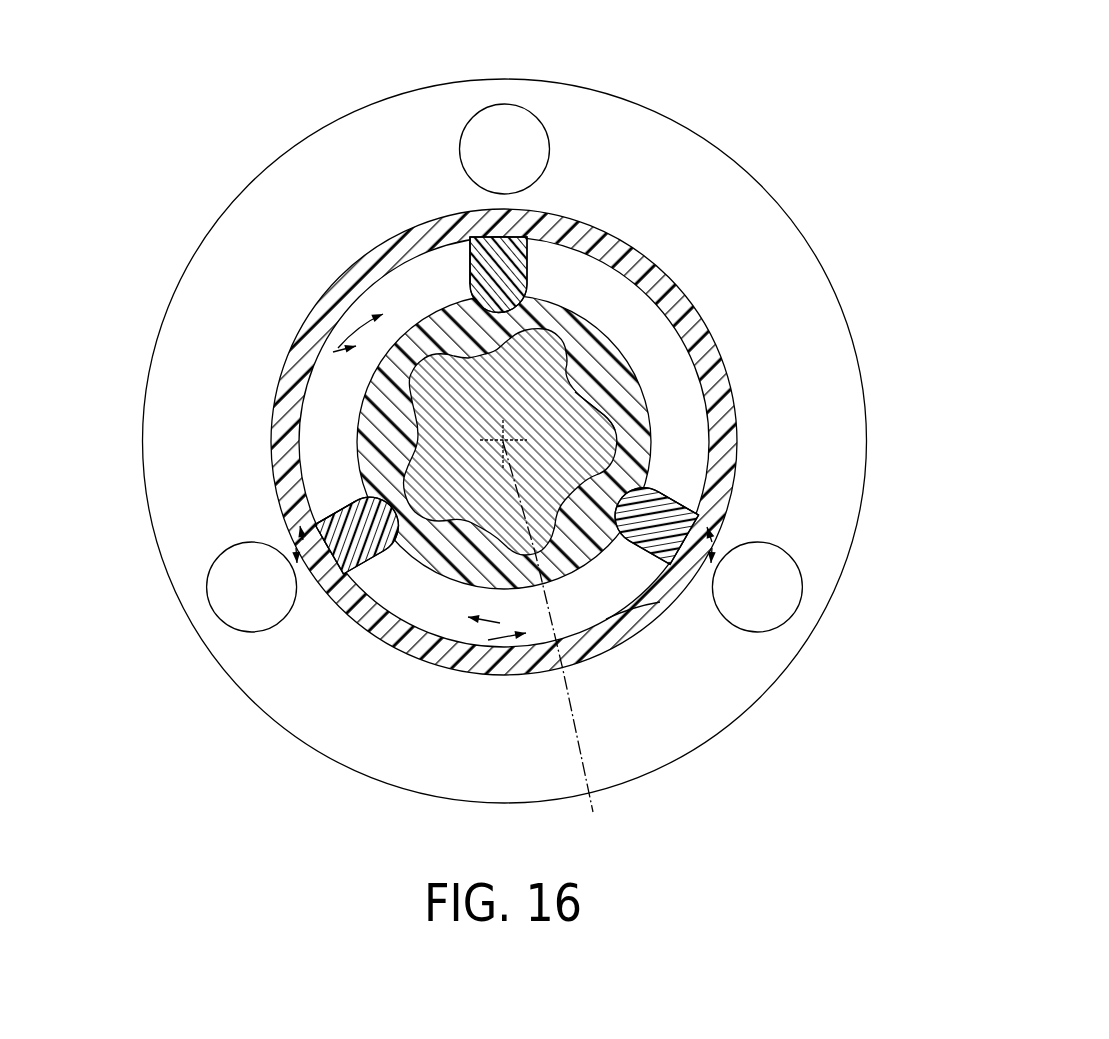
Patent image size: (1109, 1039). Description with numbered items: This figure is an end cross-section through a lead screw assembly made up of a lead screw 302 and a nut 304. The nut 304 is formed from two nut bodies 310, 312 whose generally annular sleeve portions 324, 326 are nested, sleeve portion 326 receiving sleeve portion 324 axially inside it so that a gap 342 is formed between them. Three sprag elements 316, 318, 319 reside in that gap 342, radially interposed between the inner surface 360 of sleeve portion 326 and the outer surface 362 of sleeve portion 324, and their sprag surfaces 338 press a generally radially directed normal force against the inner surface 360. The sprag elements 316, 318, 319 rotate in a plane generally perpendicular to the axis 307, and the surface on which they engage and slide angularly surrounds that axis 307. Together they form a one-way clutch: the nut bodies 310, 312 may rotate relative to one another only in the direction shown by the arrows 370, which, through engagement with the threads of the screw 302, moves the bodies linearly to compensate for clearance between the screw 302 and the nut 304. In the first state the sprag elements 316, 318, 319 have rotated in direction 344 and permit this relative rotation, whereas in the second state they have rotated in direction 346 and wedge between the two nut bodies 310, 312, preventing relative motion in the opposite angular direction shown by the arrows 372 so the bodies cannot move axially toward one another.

The lead screw 302 is at (461, 499).
The nut 304 is at (505, 441).
The axis 307 is at (590, 603).
The nut body 310 is at (650, 420).
The nut body 312 is at (297, 143).
The sprag element 316 is at (347, 610).
The sprag element 318 is at (543, 263).
The sprag element 319 is at (650, 570).
The sleeve portion 324 is at (355, 445).
The sleeve portion 326 is at (612, 612).
The sprag surface 338 is at (473, 243).
The gap 342 is at (630, 613).
The direction 344 is at (292, 562).
The direction 346 is at (300, 545).
The inner surface 360 is at (620, 583).
The outer surface 362 is at (647, 468).
The arrows 370 is at (502, 652).
The arrows 372 is at (353, 327).